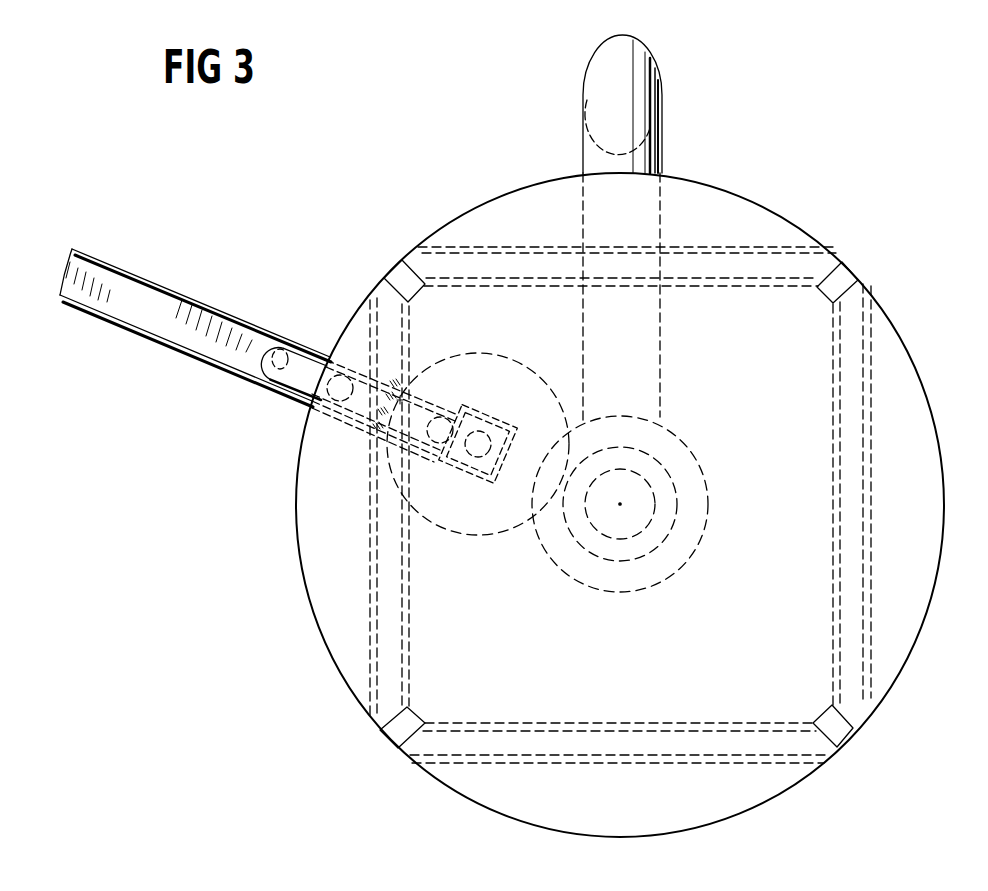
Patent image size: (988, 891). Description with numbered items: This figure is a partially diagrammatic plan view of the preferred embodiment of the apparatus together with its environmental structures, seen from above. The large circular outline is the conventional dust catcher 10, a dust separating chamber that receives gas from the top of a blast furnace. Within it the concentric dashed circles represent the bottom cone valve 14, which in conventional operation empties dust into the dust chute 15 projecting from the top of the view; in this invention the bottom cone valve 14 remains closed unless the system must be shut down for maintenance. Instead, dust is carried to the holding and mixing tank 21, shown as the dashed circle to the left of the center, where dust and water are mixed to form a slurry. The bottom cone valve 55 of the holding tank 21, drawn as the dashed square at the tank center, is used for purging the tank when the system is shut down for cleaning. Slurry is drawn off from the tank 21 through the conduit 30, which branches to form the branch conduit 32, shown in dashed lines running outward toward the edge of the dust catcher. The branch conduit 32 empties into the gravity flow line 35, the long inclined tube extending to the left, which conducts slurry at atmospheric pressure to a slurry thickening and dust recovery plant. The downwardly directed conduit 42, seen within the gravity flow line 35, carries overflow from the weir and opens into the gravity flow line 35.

The dust catcher 10 is at (708, 661).
The bottom cone valve 14 is at (643, 497).
The dust chute 15 is at (603, 124).
The holding and mixing tank 21 is at (503, 358).
The conduit 30 is at (429, 405).
The branch conduit 32 is at (336, 362).
The gravity flow line 35 is at (188, 312).
The downwardly directed conduit 42 is at (287, 338).
The bottom cone valve 55 is at (470, 478).